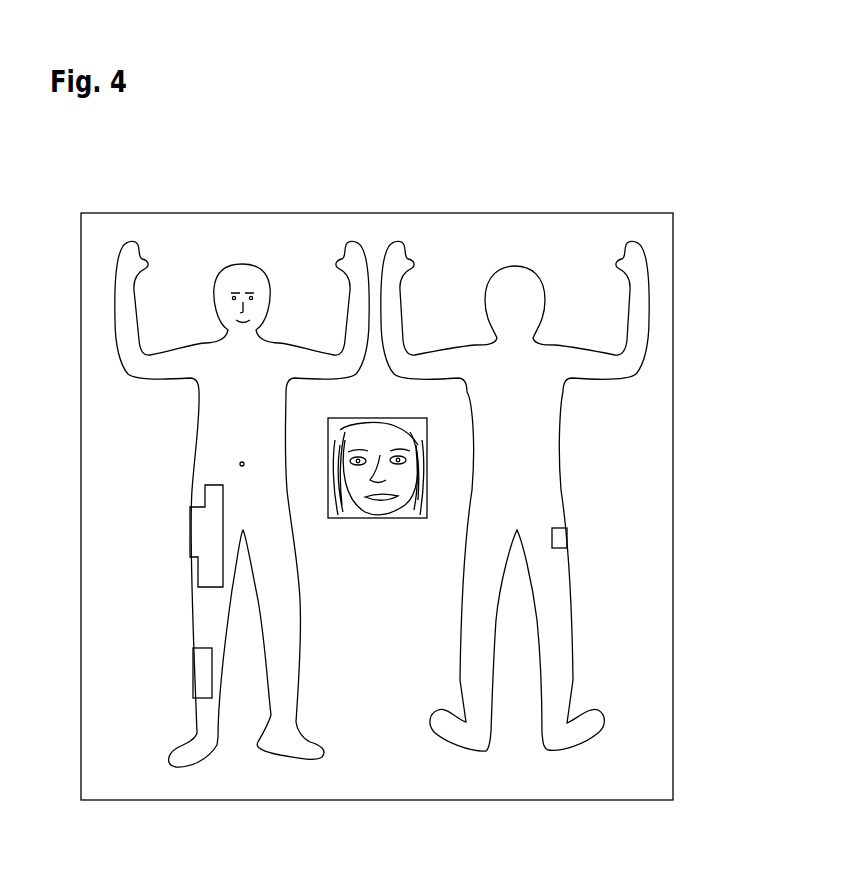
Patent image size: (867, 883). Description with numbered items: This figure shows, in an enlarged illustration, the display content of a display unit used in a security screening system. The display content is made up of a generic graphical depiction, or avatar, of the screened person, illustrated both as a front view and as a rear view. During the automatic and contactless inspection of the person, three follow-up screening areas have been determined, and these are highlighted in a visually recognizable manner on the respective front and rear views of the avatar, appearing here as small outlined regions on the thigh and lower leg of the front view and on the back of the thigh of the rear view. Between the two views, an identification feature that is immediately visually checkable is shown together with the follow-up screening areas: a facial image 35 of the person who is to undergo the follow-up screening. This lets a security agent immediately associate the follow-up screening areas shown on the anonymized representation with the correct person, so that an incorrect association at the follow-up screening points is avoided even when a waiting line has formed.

The facial image 35 is at (378, 518).